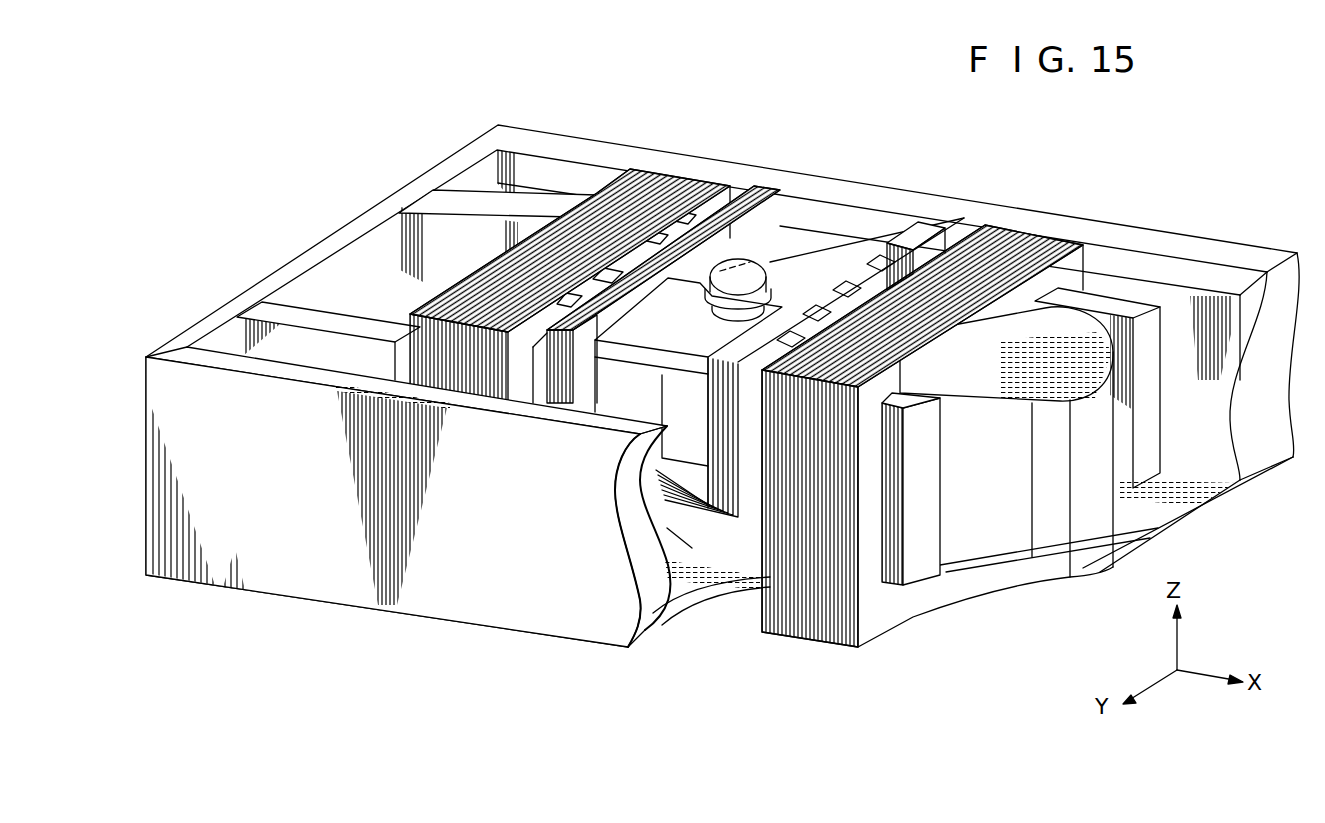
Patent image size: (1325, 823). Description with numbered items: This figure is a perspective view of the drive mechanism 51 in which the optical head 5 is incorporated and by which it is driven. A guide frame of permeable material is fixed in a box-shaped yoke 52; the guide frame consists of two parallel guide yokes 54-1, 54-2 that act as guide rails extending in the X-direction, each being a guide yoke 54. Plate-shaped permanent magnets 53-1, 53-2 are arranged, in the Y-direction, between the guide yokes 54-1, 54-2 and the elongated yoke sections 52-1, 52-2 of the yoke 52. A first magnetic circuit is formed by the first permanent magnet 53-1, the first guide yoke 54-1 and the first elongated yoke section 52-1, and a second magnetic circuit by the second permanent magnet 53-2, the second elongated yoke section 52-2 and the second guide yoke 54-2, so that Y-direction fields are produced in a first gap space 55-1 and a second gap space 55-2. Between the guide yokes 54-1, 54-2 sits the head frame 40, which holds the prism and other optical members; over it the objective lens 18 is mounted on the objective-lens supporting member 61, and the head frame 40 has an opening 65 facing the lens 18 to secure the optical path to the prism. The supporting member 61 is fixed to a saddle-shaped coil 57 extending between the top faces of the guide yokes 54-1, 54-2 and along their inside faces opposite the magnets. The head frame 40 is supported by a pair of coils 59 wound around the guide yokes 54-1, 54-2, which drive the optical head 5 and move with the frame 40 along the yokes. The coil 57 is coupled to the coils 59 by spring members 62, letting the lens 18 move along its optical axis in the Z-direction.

The drive mechanism 51 is at (827, 132).
The box-shaped yoke 52 is at (560, 148).
The first elongated yoke section 52-1 is at (302, 373).
The second elongated yoke section 52-2 is at (1247, 257).
The first permanent magnet 53-1 is at (667, 590).
The second permanent magnet 53-2 is at (1180, 277).
The guide yoke 54 is at (1107, 305).
The first guide yoke 54-1 is at (293, 300).
The second guide yoke 54-2 is at (443, 207).
The first gap space 55-1 is at (673, 520).
The second gap space 55-2 is at (1177, 483).
The saddle-shaped coil 57 is at (928, 226).
The coils 59 is at (670, 182).
The objective-lens supporting member 61 is at (792, 283).
The spring members 62 is at (710, 207).
The objective lens 18 is at (712, 300).
The opening 65 is at (728, 312).
The optical head 5 is at (657, 325).
The head frame 40 is at (1055, 563).